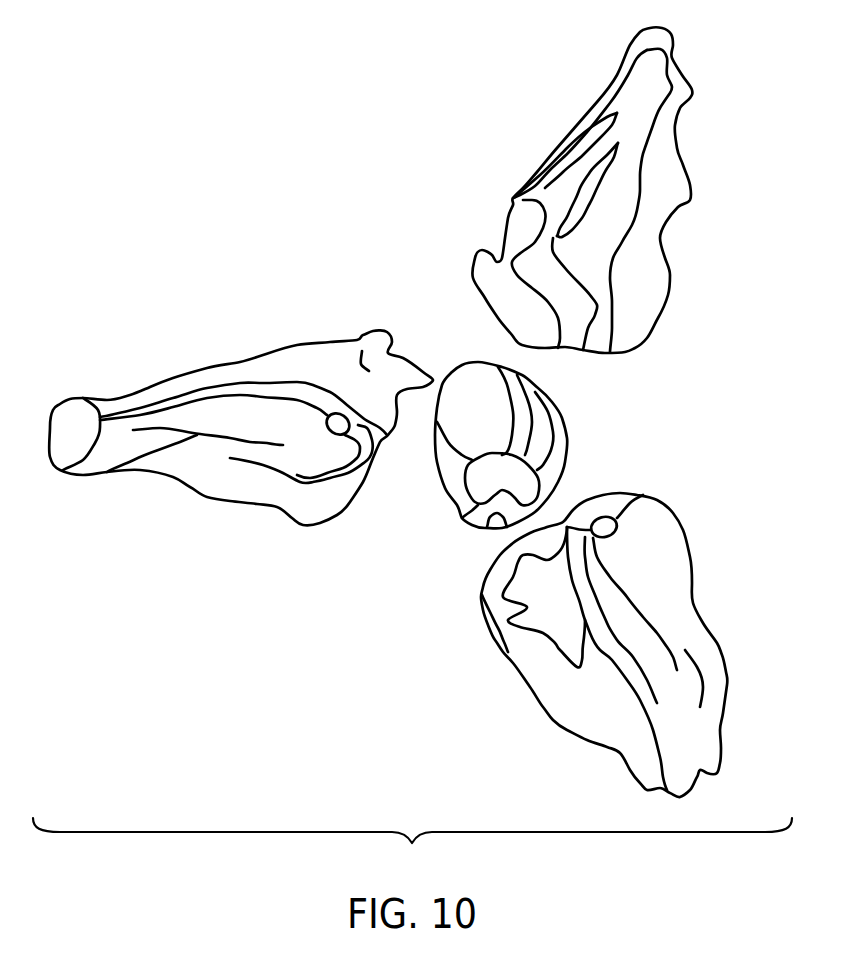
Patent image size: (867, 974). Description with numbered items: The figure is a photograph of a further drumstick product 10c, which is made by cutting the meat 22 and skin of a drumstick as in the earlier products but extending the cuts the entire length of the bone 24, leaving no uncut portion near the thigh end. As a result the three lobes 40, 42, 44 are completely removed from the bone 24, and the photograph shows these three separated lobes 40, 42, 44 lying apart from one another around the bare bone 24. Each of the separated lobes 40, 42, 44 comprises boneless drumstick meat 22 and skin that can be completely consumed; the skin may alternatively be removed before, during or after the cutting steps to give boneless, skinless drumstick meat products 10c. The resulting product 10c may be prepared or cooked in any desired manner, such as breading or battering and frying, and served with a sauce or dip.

The drumstick product 10c is at (374, 80).
The meat 22 is at (647, 237).
The bone 24 is at (520, 477).
The lobe 40 is at (250, 450).
The lobe 42 is at (667, 158).
The lobe 44 is at (700, 660).